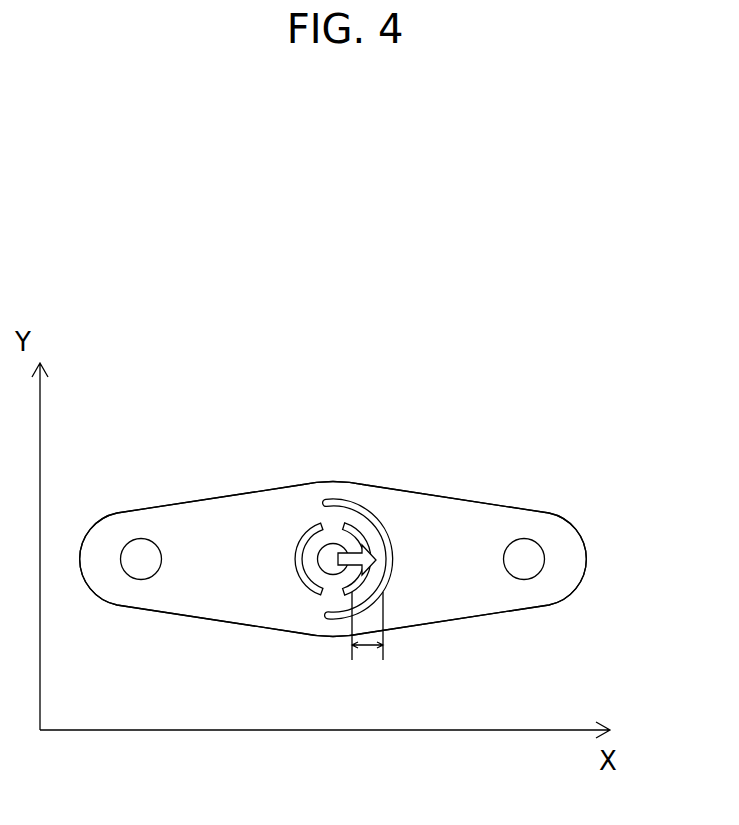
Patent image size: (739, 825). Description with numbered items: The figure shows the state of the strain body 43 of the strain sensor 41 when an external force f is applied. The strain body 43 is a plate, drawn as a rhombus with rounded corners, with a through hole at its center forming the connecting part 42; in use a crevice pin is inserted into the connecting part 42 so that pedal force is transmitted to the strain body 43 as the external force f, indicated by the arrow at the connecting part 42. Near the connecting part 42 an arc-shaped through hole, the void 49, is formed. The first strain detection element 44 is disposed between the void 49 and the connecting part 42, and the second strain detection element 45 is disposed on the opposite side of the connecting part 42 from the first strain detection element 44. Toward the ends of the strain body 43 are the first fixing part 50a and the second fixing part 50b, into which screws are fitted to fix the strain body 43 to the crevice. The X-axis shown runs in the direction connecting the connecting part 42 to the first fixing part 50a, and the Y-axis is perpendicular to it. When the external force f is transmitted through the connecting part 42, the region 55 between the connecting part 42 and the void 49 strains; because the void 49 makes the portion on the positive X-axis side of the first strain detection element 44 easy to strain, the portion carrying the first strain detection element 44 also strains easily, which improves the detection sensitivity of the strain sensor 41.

The strain sensor 41 is at (204, 412).
The connecting part 42 is at (333, 555).
The strain body 43 is at (211, 594).
The first strain detection element 44 is at (358, 537).
The second strain detection element 45 is at (304, 540).
The void 49 is at (379, 598).
The first fixing part 50a is at (530, 562).
The second fixing part 50b is at (137, 552).
The region 55 is at (366, 642).
The external force f is at (343, 558).